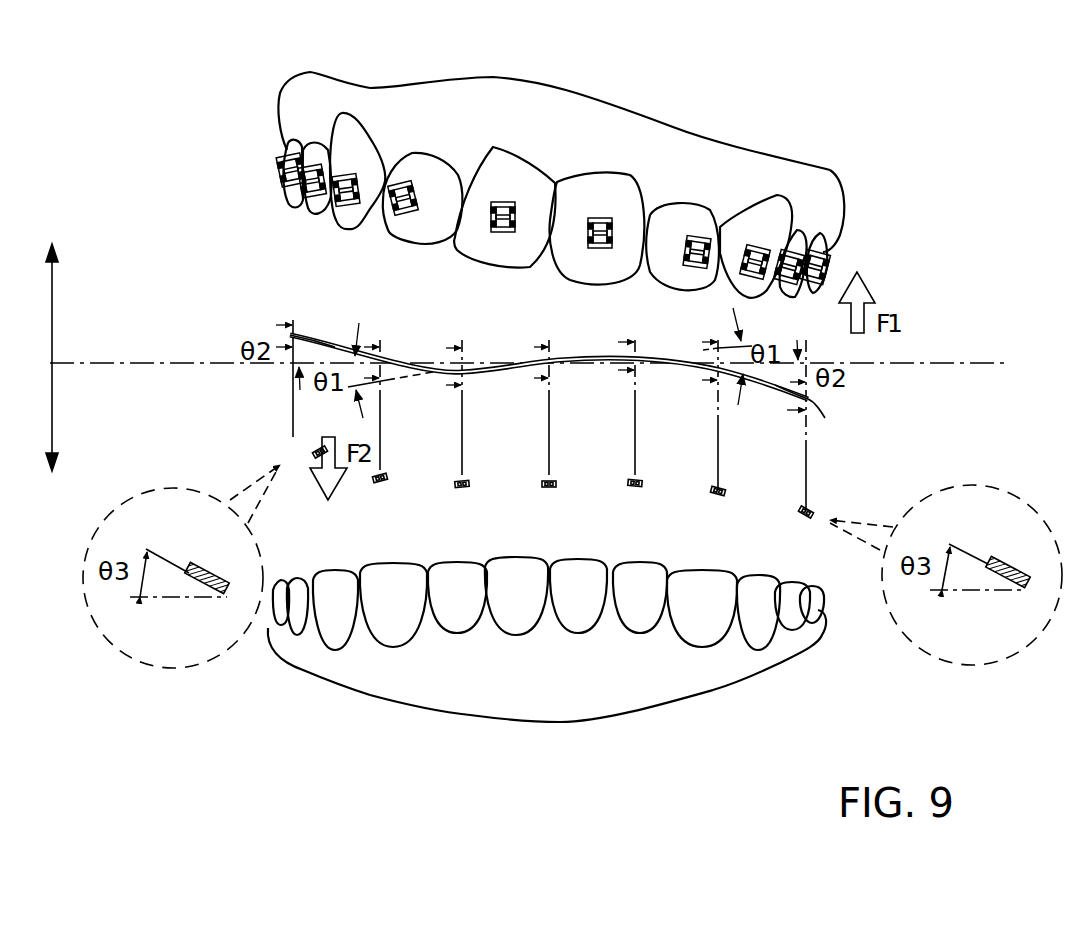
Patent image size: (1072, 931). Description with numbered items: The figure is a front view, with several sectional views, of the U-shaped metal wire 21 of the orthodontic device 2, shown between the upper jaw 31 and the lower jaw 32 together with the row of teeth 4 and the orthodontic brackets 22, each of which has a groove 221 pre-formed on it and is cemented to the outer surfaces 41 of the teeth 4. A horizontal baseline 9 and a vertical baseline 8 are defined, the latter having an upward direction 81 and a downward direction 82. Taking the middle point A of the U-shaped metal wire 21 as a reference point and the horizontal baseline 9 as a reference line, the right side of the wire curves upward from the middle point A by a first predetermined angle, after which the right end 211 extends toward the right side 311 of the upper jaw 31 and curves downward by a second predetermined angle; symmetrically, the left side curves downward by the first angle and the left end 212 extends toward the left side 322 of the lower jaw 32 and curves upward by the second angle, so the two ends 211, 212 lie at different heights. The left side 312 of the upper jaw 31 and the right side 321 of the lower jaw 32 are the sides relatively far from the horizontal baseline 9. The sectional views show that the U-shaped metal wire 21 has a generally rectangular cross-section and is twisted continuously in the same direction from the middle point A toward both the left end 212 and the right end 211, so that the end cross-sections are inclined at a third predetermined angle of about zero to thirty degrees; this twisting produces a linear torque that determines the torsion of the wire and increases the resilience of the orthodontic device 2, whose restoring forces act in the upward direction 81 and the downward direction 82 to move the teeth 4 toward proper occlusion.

The orthodontic device 2 is at (268, 412).
The U-shaped metal wire 21 is at (502, 368).
The right end 211 is at (812, 402).
The left end 212 is at (305, 338).
The orthodontic brackets 22 is at (407, 210).
The groove 221 is at (392, 217).
The upper jaw 31 is at (575, 86).
The right side of the upper jaw 311 is at (830, 187).
The left side of the upper jaw 312 is at (305, 88).
The lower jaw 32 is at (490, 687).
The right side of the lower jaw 321 is at (815, 642).
The left side of the lower jaw 322 is at (277, 640).
The teeth 4 is at (530, 162).
The outer surfaces 41 is at (622, 197).
The vertical baseline 8 is at (52, 320).
The upward direction 81 is at (58, 252).
The downward direction 82 is at (58, 450).
The horizontal baseline 9 is at (996, 363).
The middle point A is at (552, 366).